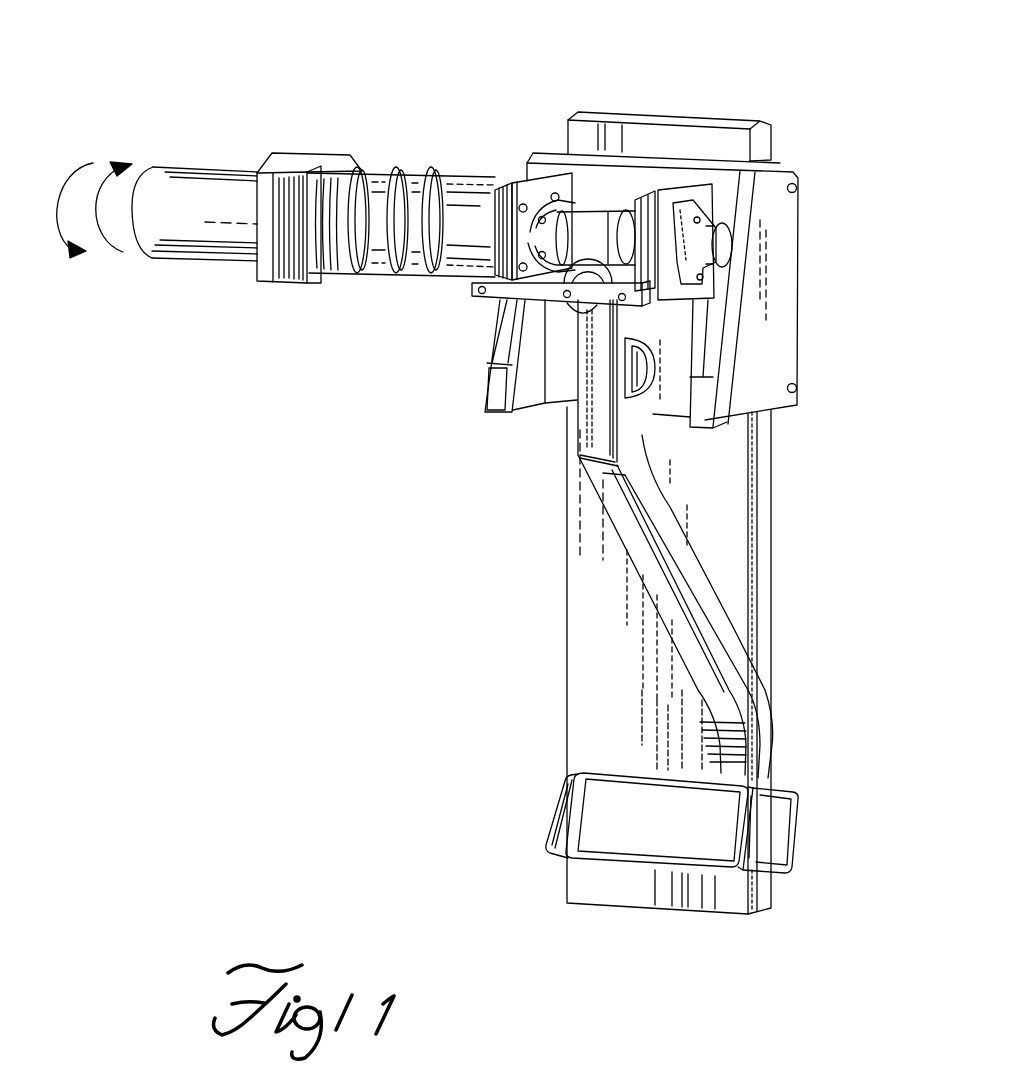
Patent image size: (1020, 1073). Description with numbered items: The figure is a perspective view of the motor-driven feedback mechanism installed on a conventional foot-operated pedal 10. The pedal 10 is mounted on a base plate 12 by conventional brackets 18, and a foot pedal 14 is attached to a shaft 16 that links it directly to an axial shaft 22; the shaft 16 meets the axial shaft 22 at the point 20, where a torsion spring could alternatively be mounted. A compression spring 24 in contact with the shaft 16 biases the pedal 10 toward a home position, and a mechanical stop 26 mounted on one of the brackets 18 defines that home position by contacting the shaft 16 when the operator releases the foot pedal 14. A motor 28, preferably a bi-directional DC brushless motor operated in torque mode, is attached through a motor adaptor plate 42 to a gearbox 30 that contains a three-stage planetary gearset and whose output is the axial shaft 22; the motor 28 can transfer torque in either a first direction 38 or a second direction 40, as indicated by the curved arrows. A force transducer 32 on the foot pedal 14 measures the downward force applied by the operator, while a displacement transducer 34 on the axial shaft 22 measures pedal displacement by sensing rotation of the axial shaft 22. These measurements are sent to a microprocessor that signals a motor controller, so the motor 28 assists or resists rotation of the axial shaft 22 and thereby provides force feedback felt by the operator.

The pedal 10 is at (790, 454).
The base plate 12 is at (728, 557).
The foot pedal 14 is at (780, 808).
The shaft 16 is at (723, 670).
The brackets 18 is at (787, 278).
The point 20 is at (600, 196).
The axial shaft 22 is at (722, 246).
The compression spring 24 is at (653, 367).
The mechanical stop 26 is at (582, 303).
The motor 28 is at (212, 238).
The gearbox 30 is at (407, 172).
The force transducer 32 is at (587, 797).
The displacement transducer 34 is at (687, 197).
The first direction 38 is at (84, 217).
The second direction 40 is at (124, 217).
The motor adaptor plate 42 is at (263, 183).